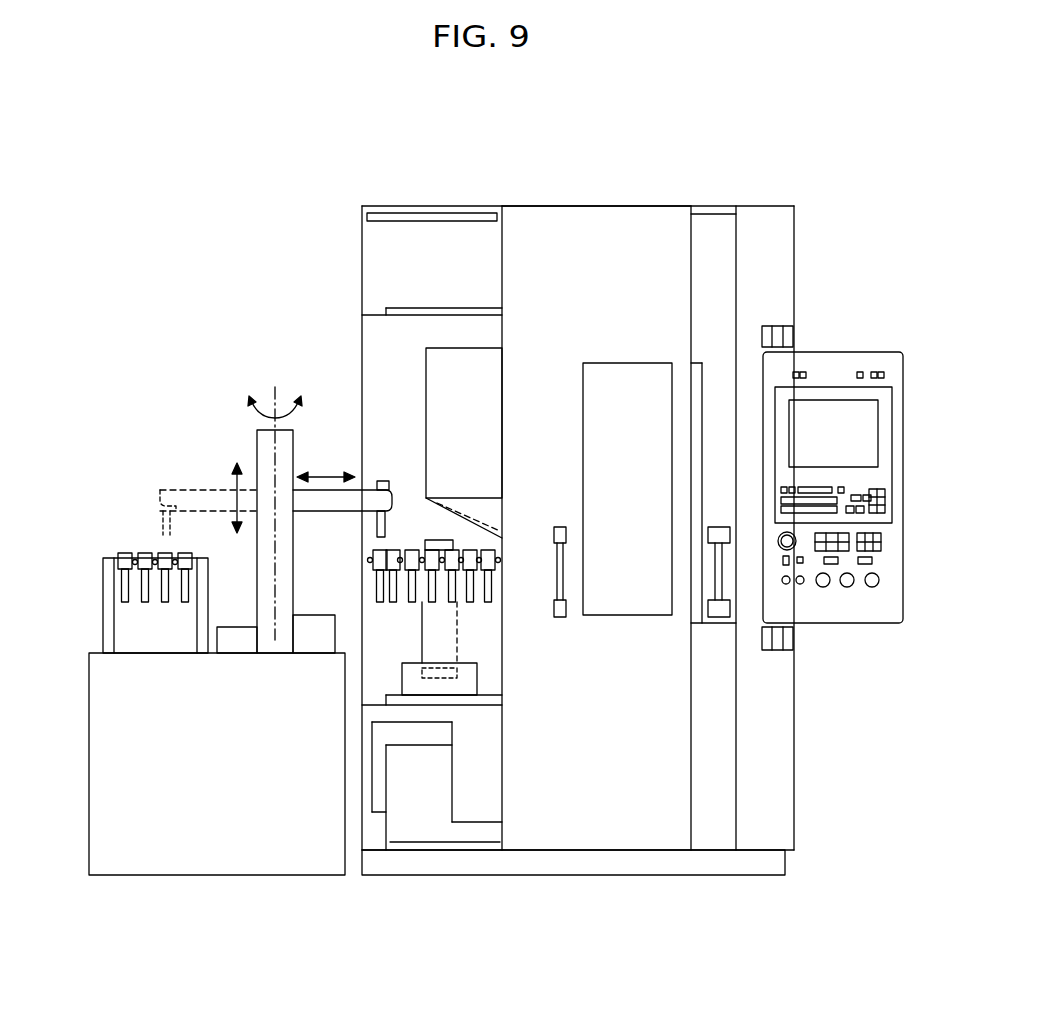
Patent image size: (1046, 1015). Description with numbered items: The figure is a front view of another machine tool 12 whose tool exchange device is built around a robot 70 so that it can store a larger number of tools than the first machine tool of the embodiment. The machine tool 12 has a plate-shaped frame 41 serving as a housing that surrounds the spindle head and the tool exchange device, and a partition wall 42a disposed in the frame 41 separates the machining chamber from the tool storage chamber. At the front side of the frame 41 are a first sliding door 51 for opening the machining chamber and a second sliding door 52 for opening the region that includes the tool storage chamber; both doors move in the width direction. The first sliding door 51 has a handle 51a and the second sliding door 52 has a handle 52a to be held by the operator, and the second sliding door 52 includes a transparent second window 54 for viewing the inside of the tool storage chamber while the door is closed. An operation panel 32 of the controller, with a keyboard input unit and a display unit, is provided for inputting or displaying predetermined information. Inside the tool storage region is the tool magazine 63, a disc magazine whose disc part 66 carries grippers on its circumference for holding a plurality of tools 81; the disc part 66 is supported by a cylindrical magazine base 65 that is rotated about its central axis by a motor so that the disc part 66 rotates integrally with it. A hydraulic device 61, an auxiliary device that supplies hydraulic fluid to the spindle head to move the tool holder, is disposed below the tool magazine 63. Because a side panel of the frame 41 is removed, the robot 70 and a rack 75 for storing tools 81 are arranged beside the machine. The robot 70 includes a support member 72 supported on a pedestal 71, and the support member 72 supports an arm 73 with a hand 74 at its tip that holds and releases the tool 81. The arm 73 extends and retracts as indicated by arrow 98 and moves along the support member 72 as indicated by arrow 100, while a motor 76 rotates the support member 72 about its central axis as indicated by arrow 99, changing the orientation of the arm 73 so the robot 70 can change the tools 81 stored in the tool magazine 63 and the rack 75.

The machine tool 12 is at (778, 168).
The operation panel 32 is at (883, 478).
The frame 41 is at (414, 206).
The partition wall 42a is at (478, 370).
The first sliding door 51 is at (712, 806).
The handle 51a is at (722, 612).
The second sliding door 52 is at (615, 803).
The handle 52a is at (560, 620).
The second window 54 is at (648, 600).
The hydraulic device 61 is at (400, 826).
The tool magazine 63 is at (550, 930).
The magazine base 65 is at (436, 647).
The disc part 66 is at (500, 562).
The robot 70 is at (294, 362).
The pedestal 71 is at (120, 812).
The support member 72 is at (268, 445).
The arm 73 is at (306, 500).
The hand 74 is at (380, 482).
The rack 75 is at (108, 630).
The motor 76 is at (232, 648).
The tool 81 is at (125, 588).
The arrow 98 is at (325, 473).
The arrow 99 is at (245, 415).
The arrow 100 is at (232, 500).